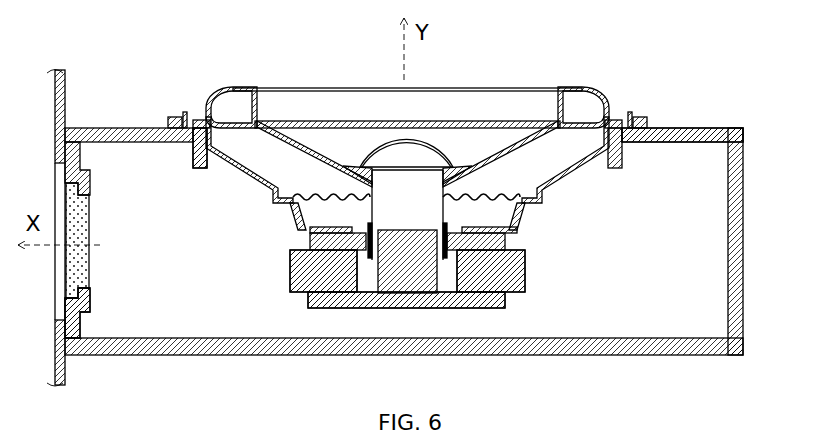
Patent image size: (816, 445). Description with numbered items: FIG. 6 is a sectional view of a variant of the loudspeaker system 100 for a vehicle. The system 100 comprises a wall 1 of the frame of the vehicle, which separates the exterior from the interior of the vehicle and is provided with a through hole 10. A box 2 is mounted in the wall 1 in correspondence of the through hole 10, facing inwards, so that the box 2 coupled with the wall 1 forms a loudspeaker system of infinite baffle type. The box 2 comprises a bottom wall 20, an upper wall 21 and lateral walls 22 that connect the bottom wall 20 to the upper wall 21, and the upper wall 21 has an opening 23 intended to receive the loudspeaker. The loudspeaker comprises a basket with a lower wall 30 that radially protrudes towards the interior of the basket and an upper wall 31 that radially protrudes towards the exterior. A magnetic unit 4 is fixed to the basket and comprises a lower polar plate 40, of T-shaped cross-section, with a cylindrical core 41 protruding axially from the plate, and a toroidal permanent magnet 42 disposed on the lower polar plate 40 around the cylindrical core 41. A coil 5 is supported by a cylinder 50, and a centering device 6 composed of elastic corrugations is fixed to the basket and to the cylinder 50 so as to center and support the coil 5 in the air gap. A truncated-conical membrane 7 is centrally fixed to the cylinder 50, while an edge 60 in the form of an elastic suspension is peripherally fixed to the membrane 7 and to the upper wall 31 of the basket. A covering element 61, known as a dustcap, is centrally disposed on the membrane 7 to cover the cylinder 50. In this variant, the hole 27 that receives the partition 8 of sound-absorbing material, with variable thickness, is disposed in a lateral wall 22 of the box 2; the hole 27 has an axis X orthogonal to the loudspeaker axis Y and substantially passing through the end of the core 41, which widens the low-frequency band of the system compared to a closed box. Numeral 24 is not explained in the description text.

The loudspeaker system 100 is at (724, 88).
The wall 1 is at (67, 97).
The box 2 is at (595, 84).
The magnetic unit 4 is at (518, 304).
The coil 5 is at (310, 240).
The centering device 6 is at (672, 128).
The membrane 7 is at (305, 145).
The partition 8 is at (72, 257).
The through hole 10 is at (55, 163).
The bottom wall 20 is at (633, 355).
The upper wall 21 is at (697, 142).
The lateral wall 22 is at (742, 297).
The opening 23 is at (190, 143).
The mounting leg 24 is at (185, 163).
The hole 27 is at (86, 201).
The lower wall 30 is at (536, 217).
The upper wall 31 is at (610, 118).
The lower polar plate 40 is at (342, 308).
The cylindrical core 41 is at (393, 278).
The permanent magnet 42 is at (303, 278).
The cylinder 50 is at (365, 209).
The edge 60 is at (288, 97).
The covering element 61 is at (420, 145).